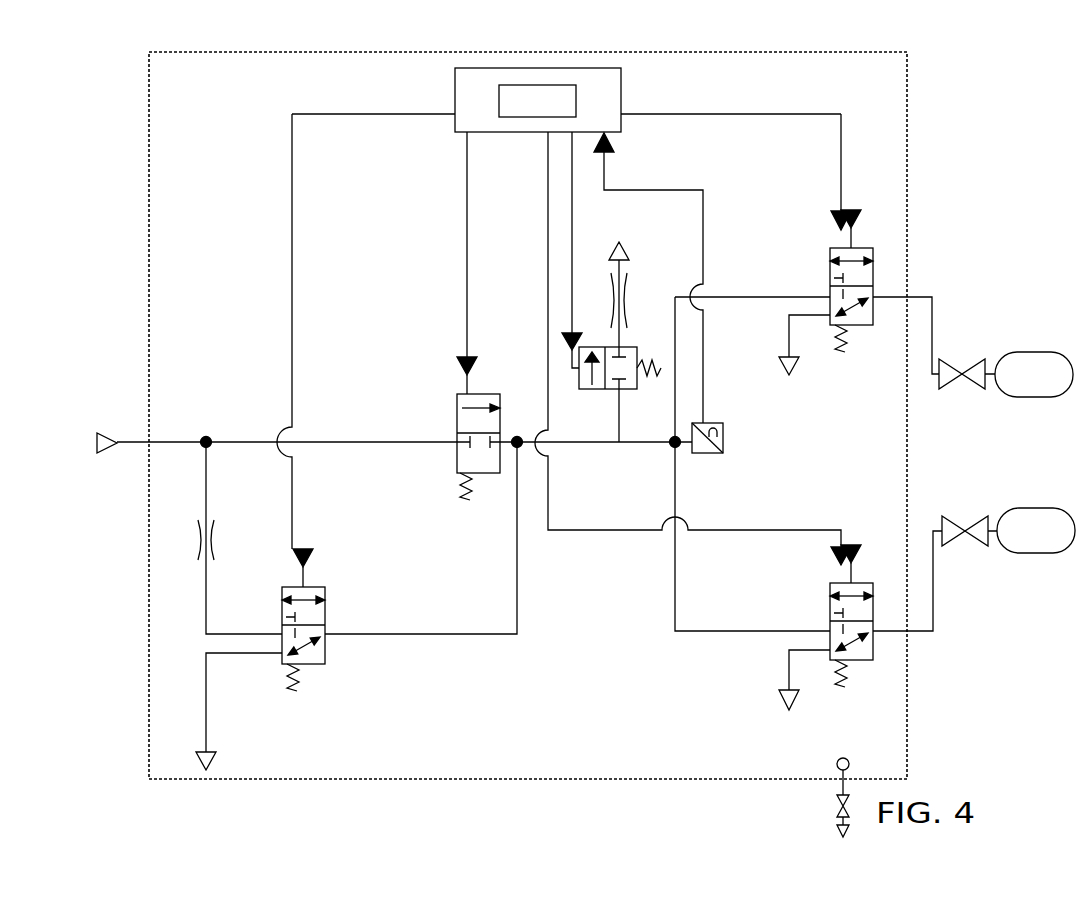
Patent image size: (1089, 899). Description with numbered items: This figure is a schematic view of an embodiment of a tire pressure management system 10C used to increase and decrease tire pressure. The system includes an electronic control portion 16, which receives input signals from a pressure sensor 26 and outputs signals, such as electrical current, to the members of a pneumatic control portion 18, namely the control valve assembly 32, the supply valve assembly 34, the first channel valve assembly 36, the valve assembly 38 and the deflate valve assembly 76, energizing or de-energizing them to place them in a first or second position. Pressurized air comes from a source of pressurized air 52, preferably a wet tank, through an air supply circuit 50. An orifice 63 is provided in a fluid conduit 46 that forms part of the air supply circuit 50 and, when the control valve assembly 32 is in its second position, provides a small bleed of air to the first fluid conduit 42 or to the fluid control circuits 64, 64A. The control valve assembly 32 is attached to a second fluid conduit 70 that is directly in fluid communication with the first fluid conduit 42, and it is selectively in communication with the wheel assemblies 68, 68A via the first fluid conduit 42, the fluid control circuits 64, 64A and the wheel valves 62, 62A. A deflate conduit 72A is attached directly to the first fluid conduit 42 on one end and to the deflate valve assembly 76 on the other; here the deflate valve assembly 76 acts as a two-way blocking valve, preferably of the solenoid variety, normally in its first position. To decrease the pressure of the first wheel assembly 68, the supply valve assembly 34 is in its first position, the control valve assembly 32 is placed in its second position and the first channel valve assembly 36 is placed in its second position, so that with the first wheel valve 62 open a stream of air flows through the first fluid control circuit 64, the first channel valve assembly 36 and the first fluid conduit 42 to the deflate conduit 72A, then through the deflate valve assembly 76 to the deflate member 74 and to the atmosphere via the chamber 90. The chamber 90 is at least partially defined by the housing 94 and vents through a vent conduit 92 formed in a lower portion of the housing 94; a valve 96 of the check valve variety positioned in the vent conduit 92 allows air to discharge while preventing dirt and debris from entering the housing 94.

The tire pressure management system 10C is at (525, 415).
The electronic control portion 16 is at (480, 68).
The pneumatic control portion 18 is at (401, 440).
The pressure sensor 26 is at (708, 423).
The control valve assembly 32 is at (312, 587).
The supply valve assembly 34 is at (485, 473).
The first channel valve assembly 36 is at (860, 583).
The valve assembly 38 is at (860, 248).
The first fluid conduit 42 is at (588, 445).
The fluid conduit 46 is at (206, 488).
The air supply circuit 50 is at (139, 440).
The source of pressurized air 52 is at (100, 455).
The first wheel valve 62 is at (953, 516).
The wheel valve 62A is at (948, 360).
The orifice 63 is at (200, 548).
The first fluid control circuit 64 is at (933, 631).
The fluid control circuit 64A is at (935, 300).
The first wheel assembly 68 is at (1036, 508).
The wheel assembly 68A is at (1030, 352).
The second fluid conduit 70 is at (517, 583).
The deflate conduit 72A is at (620, 410).
The deflate member 74 is at (628, 290).
The deflate valve assembly 76 is at (630, 347).
The chamber 90 is at (584, 723).
The vent conduit 92 is at (837, 765).
The housing 94 is at (907, 712).
The valve 96 is at (836, 804).